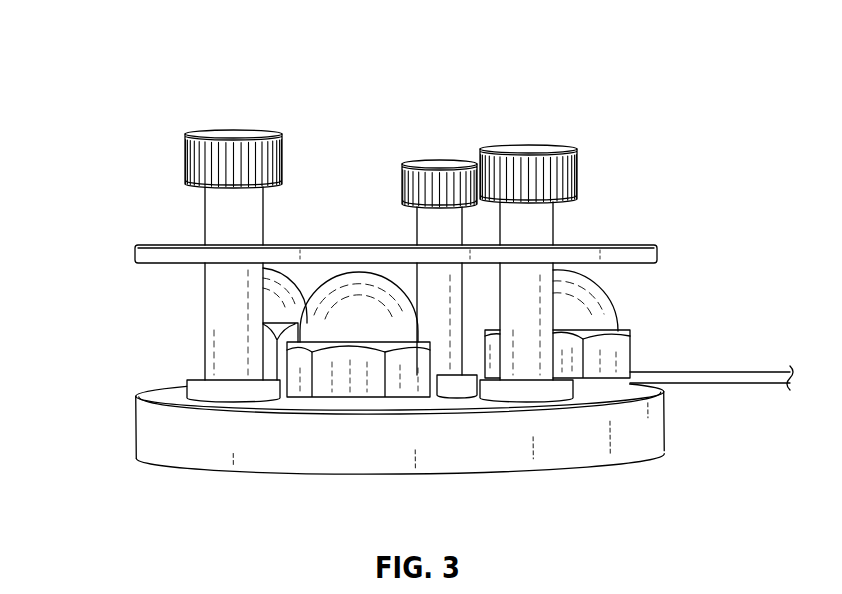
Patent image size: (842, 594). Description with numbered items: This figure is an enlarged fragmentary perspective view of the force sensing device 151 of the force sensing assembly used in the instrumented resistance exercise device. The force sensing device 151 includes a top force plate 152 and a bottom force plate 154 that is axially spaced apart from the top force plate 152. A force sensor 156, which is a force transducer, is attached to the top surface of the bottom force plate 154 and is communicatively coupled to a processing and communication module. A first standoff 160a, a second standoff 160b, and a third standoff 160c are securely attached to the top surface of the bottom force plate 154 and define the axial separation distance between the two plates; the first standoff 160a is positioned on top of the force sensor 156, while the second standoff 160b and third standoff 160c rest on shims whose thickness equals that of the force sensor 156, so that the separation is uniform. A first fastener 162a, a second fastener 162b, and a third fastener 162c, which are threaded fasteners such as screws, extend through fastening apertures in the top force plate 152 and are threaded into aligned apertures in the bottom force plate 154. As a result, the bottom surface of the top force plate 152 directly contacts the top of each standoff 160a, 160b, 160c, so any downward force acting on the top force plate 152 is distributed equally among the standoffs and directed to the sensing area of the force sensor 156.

The force sensing device 151 is at (112, 180).
The top force plate 152 is at (658, 253).
The bottom force plate 154 is at (150, 435).
The force sensor 156 is at (730, 377).
The first standoff 160a is at (617, 310).
The second standoff 160b is at (305, 382).
The third standoff 160c is at (272, 295).
The first fastener 162a is at (234, 131).
The second fastener 162b is at (442, 161).
The third fastener 162c is at (527, 148).